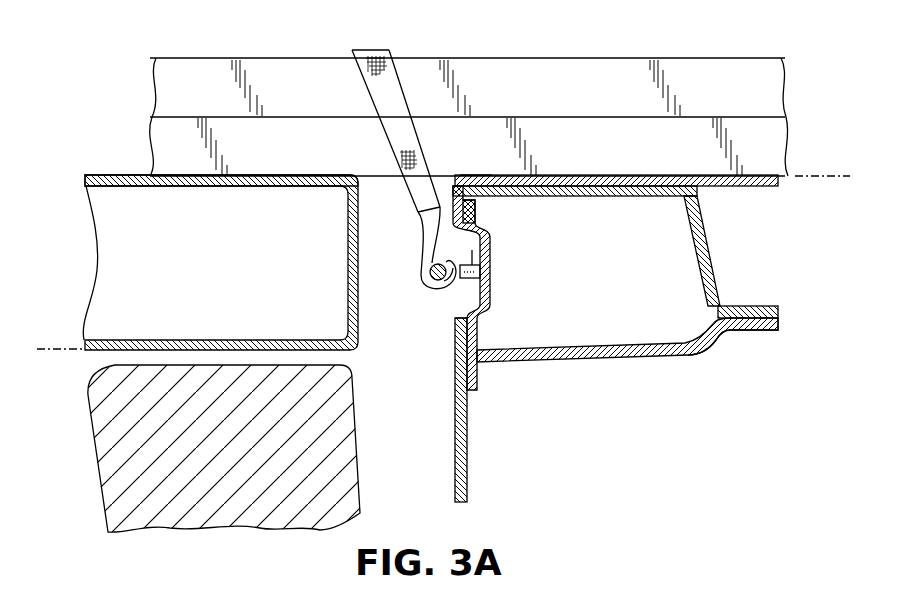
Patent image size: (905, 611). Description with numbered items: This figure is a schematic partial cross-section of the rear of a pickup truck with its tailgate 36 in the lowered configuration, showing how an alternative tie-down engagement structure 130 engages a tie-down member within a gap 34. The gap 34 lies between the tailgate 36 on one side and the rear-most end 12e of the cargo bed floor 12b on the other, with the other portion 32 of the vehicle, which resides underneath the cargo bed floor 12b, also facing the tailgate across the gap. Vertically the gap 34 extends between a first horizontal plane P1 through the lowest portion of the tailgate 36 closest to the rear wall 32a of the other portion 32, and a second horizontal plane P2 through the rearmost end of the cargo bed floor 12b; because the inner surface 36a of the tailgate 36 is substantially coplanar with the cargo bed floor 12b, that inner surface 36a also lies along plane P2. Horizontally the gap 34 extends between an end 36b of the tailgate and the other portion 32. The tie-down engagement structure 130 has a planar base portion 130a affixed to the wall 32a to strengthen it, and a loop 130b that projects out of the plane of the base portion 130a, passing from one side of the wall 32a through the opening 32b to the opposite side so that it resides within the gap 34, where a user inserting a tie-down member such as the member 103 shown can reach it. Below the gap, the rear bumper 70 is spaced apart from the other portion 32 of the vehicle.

The layered body 103 is at (202, 93).
The end of the tailgate 36b is at (360, 220).
The gap 34 is at (444, 193).
The rear-most end of the cargo bed floor 12e is at (475, 175).
The cargo bed floor 12b is at (628, 175).
The second horizontal plane P2 is at (838, 175).
The inner surface of the tailgate 36a is at (142, 173).
The tailgate 36 is at (125, 242).
The first horizontal plane P1 is at (72, 348).
The loop 130b is at (493, 238).
The tie-down engagement structure 130 is at (497, 258).
The planar base portion 130a is at (493, 283).
The opening 32b is at (465, 318).
The wall 32a is at (467, 415).
The other portion of the vehicle 32 is at (467, 458).
The rear bumper 70 is at (128, 480).